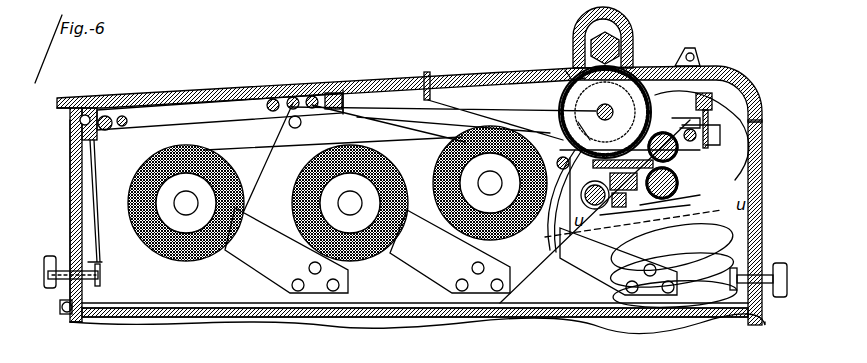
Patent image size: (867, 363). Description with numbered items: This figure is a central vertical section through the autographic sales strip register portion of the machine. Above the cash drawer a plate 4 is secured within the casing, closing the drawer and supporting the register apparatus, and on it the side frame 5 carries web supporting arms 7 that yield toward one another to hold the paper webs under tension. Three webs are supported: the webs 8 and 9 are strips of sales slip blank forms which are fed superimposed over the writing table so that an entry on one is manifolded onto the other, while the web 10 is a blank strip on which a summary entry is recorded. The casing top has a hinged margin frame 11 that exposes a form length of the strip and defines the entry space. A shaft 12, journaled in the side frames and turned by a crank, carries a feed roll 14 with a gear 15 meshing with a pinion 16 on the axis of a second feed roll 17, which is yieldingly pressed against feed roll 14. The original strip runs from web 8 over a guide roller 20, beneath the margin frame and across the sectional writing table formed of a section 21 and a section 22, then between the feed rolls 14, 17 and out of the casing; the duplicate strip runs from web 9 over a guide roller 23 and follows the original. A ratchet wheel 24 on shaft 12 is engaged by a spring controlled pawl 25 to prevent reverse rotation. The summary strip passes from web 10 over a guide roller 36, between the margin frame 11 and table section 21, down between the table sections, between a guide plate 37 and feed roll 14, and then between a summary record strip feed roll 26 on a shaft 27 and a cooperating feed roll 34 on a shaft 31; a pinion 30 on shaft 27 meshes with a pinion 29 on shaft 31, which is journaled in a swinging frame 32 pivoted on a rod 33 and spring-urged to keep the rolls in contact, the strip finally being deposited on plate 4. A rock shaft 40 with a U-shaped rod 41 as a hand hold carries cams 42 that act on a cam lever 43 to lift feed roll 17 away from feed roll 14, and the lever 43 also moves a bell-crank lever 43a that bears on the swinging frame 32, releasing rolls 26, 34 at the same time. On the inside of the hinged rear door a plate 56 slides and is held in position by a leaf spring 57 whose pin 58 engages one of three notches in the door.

The plate 4 is at (340, 315).
The side frame 5 is at (251, 302).
The web supporting arm 7 is at (243, 265).
The web 8 is at (178, 258).
The web 9 is at (294, 192).
The web 10 is at (438, 170).
The margin frame 11 is at (283, 88).
The shaft 12 is at (600, 110).
The feed roll 14 is at (565, 112).
The gear 15 is at (690, 64).
The pinion 16 is at (615, 42).
The feed roll 17 is at (625, 44).
The guide roller 20 is at (270, 118).
The writing-table section 21 is at (425, 79).
The writing-table section 22 is at (478, 77).
The guide roller 23 is at (320, 88).
The ratchet wheel 24 is at (570, 70).
The pawl 25 is at (574, 130).
The summary record strip feed roll 26 is at (680, 180).
The shaft 27 is at (680, 147).
The pinion 29 is at (690, 205).
The pinion 30 is at (682, 192).
The shaft 31 is at (648, 222).
The swinging frame 32 is at (610, 215).
The rod 33 is at (588, 204).
The feed roll 34 is at (665, 200).
The guide roller 36 is at (340, 91).
The guide plate 37 is at (563, 172).
The rock shaft 40 is at (713, 100).
The U-shaped rod 41 is at (708, 120).
The cam 42 is at (700, 84).
The cam lever 43 is at (665, 98).
The bell-crank lever 43a is at (706, 128).
The plate 56 is at (76, 218).
The leaf spring 57 is at (99, 257).
The pin 58 is at (58, 279).